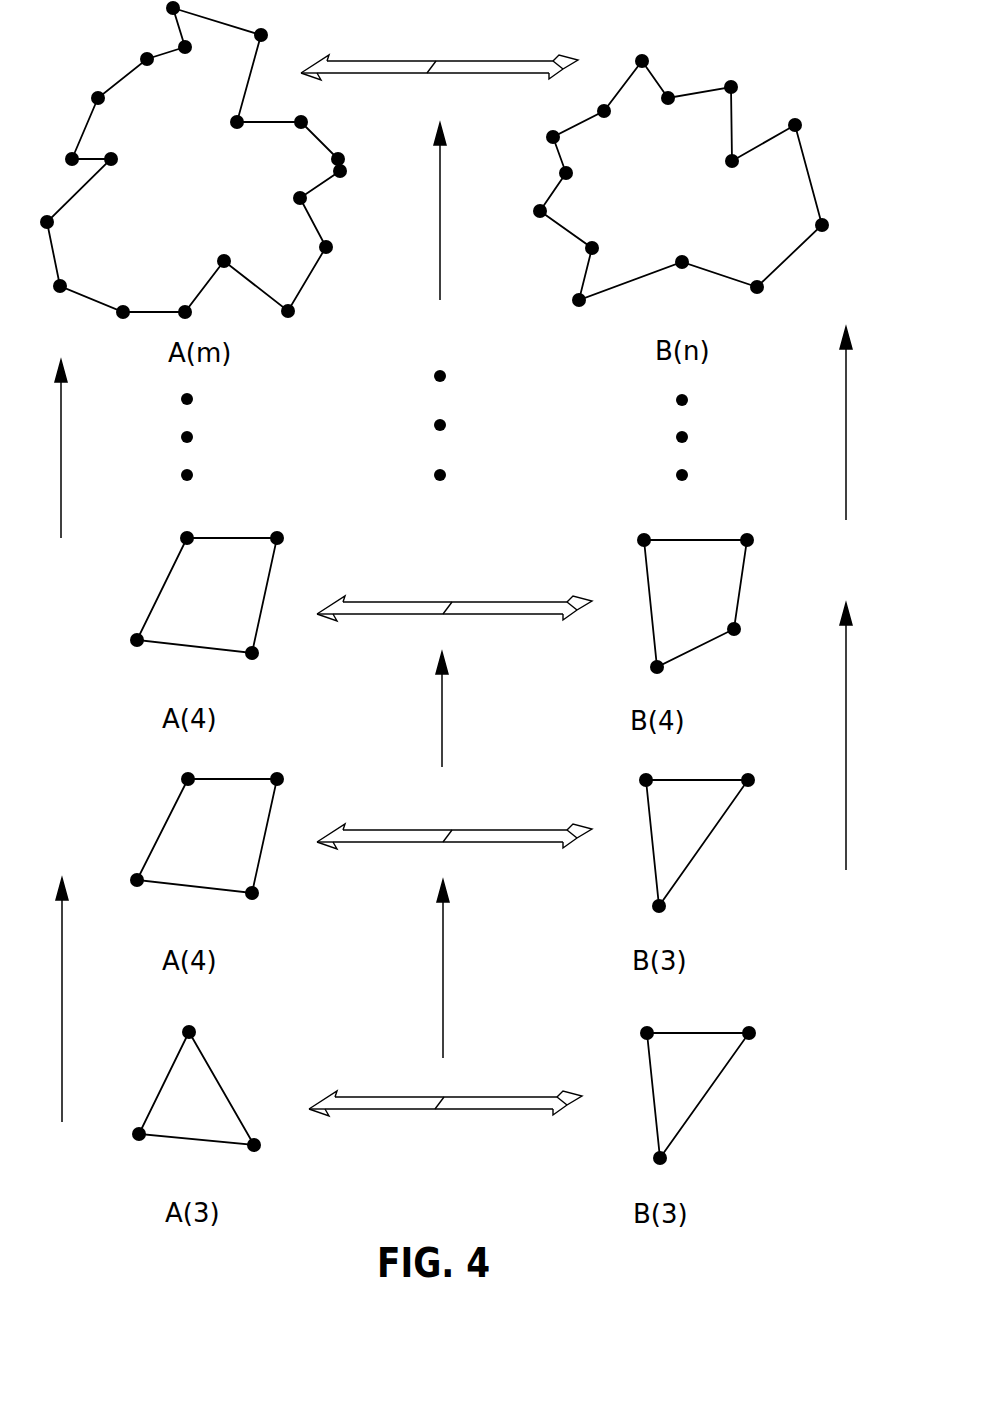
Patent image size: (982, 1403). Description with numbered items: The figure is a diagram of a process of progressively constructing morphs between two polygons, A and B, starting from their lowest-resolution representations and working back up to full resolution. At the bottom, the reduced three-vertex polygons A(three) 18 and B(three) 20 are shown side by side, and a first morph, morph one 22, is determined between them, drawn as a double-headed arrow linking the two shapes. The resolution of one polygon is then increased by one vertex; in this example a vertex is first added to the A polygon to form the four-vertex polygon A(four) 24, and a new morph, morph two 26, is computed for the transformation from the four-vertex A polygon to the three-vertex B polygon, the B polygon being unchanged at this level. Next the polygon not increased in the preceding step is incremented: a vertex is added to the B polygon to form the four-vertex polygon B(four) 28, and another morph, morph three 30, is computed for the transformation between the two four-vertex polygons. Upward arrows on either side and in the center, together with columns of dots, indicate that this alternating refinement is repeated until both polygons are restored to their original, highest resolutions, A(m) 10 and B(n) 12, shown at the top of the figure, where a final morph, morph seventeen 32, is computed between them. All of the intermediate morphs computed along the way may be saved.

The A(m) polygon 10 is at (136, 323).
The B(n) polygon 12 is at (617, 300).
The initial source polygon A(3) 18 is at (128, 1158).
The initial target polygon B(3) 20 is at (635, 1120).
The morph1 22 is at (420, 1110).
The A(4) polygon 24 is at (152, 905).
The morph2 26 is at (405, 843).
The B(4) polygon 28 is at (632, 653).
The morph3 30 is at (403, 616).
The morph17 32 is at (400, 74).